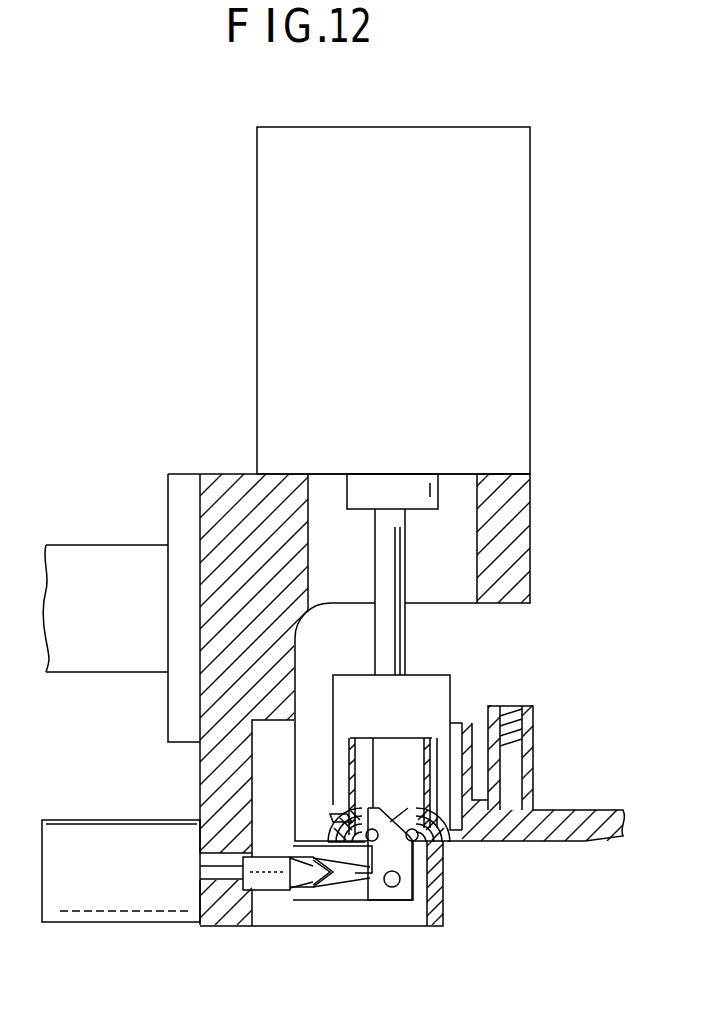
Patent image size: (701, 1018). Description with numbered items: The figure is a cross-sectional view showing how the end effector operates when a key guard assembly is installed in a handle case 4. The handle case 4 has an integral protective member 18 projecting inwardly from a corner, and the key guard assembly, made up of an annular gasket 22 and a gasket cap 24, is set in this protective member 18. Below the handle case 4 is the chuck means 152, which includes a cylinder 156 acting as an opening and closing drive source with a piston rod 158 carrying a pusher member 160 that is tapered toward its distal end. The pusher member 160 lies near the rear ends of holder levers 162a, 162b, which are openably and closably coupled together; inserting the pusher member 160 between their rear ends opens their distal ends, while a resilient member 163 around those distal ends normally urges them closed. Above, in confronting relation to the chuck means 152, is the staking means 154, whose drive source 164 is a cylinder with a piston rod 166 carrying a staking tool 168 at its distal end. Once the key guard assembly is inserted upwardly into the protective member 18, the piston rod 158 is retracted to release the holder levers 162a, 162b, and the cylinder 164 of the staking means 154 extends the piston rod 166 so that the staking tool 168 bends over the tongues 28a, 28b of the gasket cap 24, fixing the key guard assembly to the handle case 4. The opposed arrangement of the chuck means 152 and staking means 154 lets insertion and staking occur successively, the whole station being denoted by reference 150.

The nozzle assembly 150 is at (177, 222).
The drive source 164 is at (264, 293).
The staking means 154 is at (255, 383).
The piston rod 166 is at (393, 579).
The staking tool 168 is at (428, 682).
The protective member 18 is at (480, 745).
The tongue 28a is at (360, 805).
The tongue 28b is at (426, 796).
The annular gasket 22 is at (412, 657).
The gasket cap 24 is at (372, 841).
The pusher member 160 is at (266, 858).
The piston rod 158 is at (213, 868).
The cylinder 156 is at (90, 832).
The holder lever 162b is at (355, 865).
The holder lever 162a is at (402, 881).
The resilient member 163 is at (422, 840).
The chuck means 152 is at (463, 923).
The handle case 4 is at (533, 848).